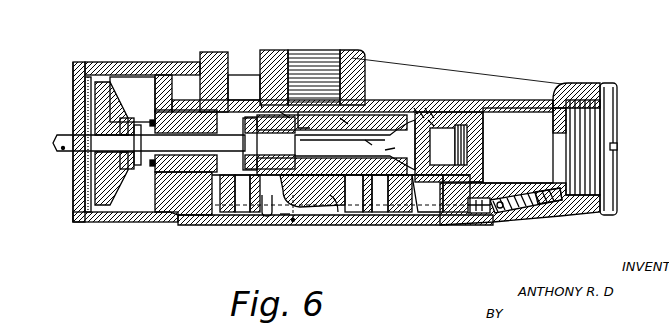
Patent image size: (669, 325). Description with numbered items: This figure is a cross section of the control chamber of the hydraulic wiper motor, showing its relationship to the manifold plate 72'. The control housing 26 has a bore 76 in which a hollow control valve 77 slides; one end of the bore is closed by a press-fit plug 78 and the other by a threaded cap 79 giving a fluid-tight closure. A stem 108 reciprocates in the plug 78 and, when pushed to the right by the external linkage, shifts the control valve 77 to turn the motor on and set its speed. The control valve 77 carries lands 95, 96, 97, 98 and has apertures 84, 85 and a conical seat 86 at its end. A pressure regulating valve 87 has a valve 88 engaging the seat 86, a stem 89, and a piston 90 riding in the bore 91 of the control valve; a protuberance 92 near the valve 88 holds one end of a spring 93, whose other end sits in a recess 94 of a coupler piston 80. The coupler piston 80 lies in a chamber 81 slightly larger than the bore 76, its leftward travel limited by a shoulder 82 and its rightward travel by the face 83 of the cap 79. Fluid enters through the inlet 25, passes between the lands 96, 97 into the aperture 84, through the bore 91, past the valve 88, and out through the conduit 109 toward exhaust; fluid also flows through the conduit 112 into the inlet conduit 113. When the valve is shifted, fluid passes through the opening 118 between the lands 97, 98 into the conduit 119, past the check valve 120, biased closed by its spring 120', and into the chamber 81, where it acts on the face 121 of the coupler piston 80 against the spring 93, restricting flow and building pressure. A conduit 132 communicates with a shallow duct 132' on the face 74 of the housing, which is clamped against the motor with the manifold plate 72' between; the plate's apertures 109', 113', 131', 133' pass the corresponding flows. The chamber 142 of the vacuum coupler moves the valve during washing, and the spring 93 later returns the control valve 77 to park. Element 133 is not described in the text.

The inlet 25 is at (322, 55).
The control housing 26 is at (530, 98).
The manifold plate 72' is at (497, 223).
The face 74 is at (180, 222).
The bore 76 is at (244, 98).
The control valve 77 is at (366, 140).
The plug 78 is at (196, 100).
The cap 79 is at (618, 118).
The coupler piston 80 is at (470, 102).
The chamber 81 is at (531, 126).
The shoulder 82 is at (430, 120).
The face 83 is at (562, 100).
The aperture 84 is at (342, 118).
The aperture 85 is at (341, 191).
The conical seat 86 is at (420, 112).
The pressure regulating valve 87 is at (346, 152).
The valve 88 is at (425, 108).
The stem 89 is at (414, 108).
The piston 90 is at (250, 160).
The bore 91 is at (286, 112).
The protuberance 92 is at (438, 152).
The spring 93 is at (416, 182).
The recess 94 is at (458, 125).
The land 95 is at (262, 107).
The land 96 is at (300, 125).
The land 97 is at (385, 150).
The land 98 is at (430, 112).
The stem 108 is at (63, 150).
The conduit 109 is at (406, 214).
The aperture 109' is at (452, 217).
The conduit 112 is at (267, 218).
The inlet conduit 113 is at (347, 193).
The aperture 113' is at (361, 217).
The opening 118 is at (338, 218).
The conduit 119 is at (375, 215).
The check valve 120 is at (526, 198).
The spring 120' is at (546, 193).
The face 121 is at (488, 178).
The aperture 131' is at (303, 227).
The conduit 132 is at (246, 212).
The shallow duct 132' is at (281, 236).
The valve guide 133 is at (227, 216).
The aperture 133' is at (206, 213).
The chamber 142 is at (155, 99).